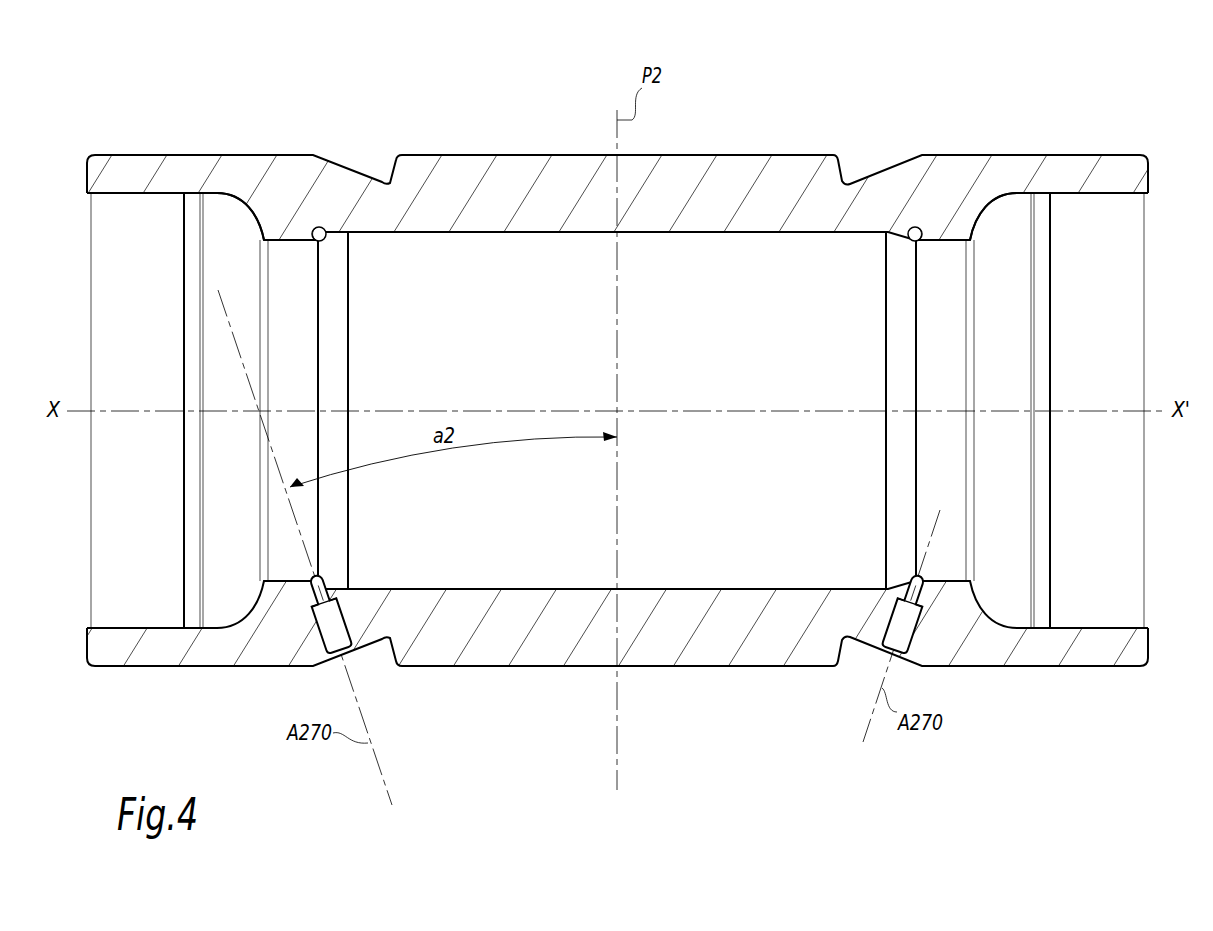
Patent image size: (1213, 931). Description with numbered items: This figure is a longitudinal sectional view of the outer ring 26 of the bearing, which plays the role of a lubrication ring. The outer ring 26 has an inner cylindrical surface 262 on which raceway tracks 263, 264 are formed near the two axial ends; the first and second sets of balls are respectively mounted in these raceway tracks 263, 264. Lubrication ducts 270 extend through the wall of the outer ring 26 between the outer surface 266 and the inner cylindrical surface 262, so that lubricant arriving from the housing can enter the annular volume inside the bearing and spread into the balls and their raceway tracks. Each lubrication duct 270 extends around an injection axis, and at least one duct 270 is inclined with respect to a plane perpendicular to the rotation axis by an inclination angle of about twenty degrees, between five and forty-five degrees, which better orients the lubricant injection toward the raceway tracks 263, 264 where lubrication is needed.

The outer ring 26 is at (1023, 125).
The inner cylindrical surface 262 is at (566, 588).
The raceway track 263 is at (215, 208).
The raceway track 264 is at (1002, 210).
The outer surface 266 is at (456, 153).
The lubrication duct 270 is at (321, 227).